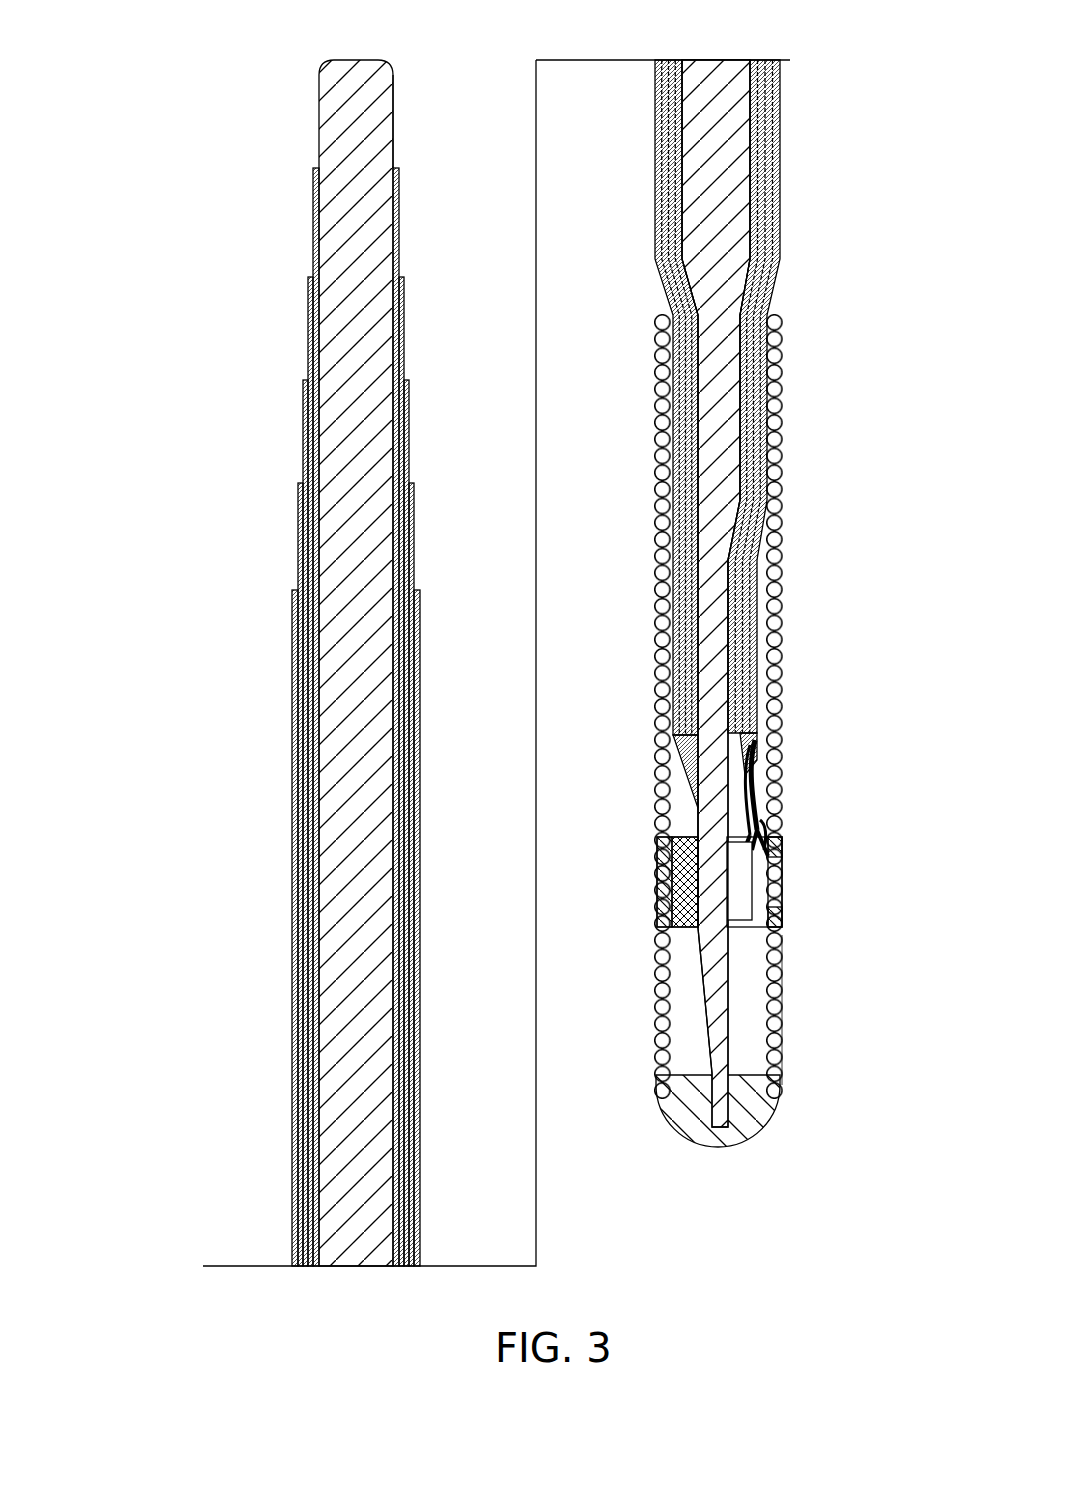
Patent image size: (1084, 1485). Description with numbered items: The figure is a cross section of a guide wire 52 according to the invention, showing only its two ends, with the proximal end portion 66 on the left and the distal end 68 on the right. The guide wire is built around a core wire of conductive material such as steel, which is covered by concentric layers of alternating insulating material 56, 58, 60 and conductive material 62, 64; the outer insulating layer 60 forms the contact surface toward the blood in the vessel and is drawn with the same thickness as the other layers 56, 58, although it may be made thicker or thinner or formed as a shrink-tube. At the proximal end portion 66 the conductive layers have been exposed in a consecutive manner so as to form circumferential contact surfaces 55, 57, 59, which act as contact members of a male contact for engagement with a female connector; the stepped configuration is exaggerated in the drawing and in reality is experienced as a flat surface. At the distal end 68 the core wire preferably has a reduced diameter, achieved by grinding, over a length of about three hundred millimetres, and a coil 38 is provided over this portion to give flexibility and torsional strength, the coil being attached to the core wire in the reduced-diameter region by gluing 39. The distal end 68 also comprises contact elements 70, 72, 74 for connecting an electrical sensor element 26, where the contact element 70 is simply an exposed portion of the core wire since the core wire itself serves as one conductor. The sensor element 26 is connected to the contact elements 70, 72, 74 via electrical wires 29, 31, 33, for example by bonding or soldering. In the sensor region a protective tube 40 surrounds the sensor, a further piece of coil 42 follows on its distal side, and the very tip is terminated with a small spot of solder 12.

The spot of solder 12 is at (752, 1137).
The sensor element 26 is at (752, 893).
The electrical wire 29 is at (757, 812).
The electrical wire 31 is at (757, 782).
The electrical wire 33 is at (755, 748).
The coil 38 is at (787, 675).
The gluing 39 is at (781, 298).
The protective tube 40 is at (782, 920).
The further piece of coil 42 is at (782, 1033).
The guide wire 52 is at (265, 1064).
The contact surface 55 is at (394, 118).
The insulated material layer 56 is at (313, 212).
The contact surface 57 is at (408, 328).
The insulated material layer 58 is at (303, 425).
The contact surface 59 is at (415, 510).
The outer insulating layer 60 is at (292, 620).
The conductive material layer 62 is at (308, 320).
The conductive material layer 64 is at (298, 525).
The proximal end portion 66 is at (201, 203).
The distal end 68 is at (819, 566).
The contact element 70 is at (685, 826).
The contact element 72 is at (683, 770).
The contact element 74 is at (673, 733).